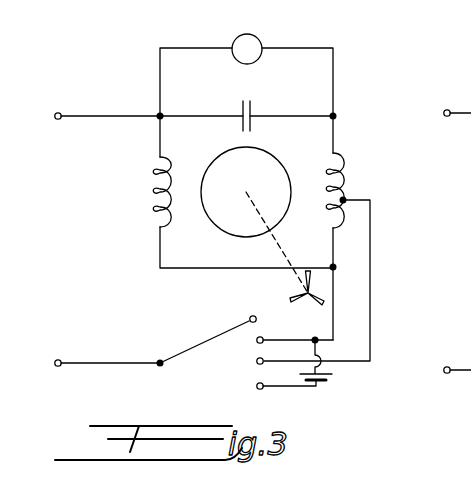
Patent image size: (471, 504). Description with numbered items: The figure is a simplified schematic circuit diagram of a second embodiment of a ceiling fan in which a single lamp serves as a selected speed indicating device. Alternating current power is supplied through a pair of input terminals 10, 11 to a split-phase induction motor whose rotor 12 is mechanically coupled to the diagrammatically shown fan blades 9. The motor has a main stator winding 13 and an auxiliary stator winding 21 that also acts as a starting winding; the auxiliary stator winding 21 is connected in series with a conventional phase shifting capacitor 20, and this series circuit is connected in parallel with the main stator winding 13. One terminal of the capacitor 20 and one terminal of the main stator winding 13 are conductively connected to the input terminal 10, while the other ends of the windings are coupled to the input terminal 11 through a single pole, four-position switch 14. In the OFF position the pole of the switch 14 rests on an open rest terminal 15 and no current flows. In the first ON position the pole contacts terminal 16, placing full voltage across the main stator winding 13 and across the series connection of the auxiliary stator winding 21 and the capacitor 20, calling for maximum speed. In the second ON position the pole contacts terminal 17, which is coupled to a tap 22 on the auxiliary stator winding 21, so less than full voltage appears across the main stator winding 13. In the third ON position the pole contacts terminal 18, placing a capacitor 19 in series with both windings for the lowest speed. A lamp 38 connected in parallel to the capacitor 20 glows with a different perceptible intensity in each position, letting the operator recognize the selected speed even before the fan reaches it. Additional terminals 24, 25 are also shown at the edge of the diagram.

The fan blades 9 is at (322, 300).
The input terminal 10 is at (58, 112).
The input terminal 11 is at (58, 359).
The rotor 12 is at (273, 167).
The main stator winding 13 is at (162, 158).
The single pole, four-position switch 14 is at (193, 333).
The rest terminal 15 is at (254, 315).
The terminal 16 is at (256, 341).
The terminal 17 is at (256, 362).
The terminal 18 is at (256, 387).
The capacitor 19 is at (334, 377).
The phase shifting capacitor 20 is at (246, 100).
The auxiliary stator winding 21 is at (344, 163).
The tap 22 is at (344, 202).
The terminal 24 is at (447, 109).
The terminal 25 is at (447, 366).
The lamp 38 is at (257, 37).